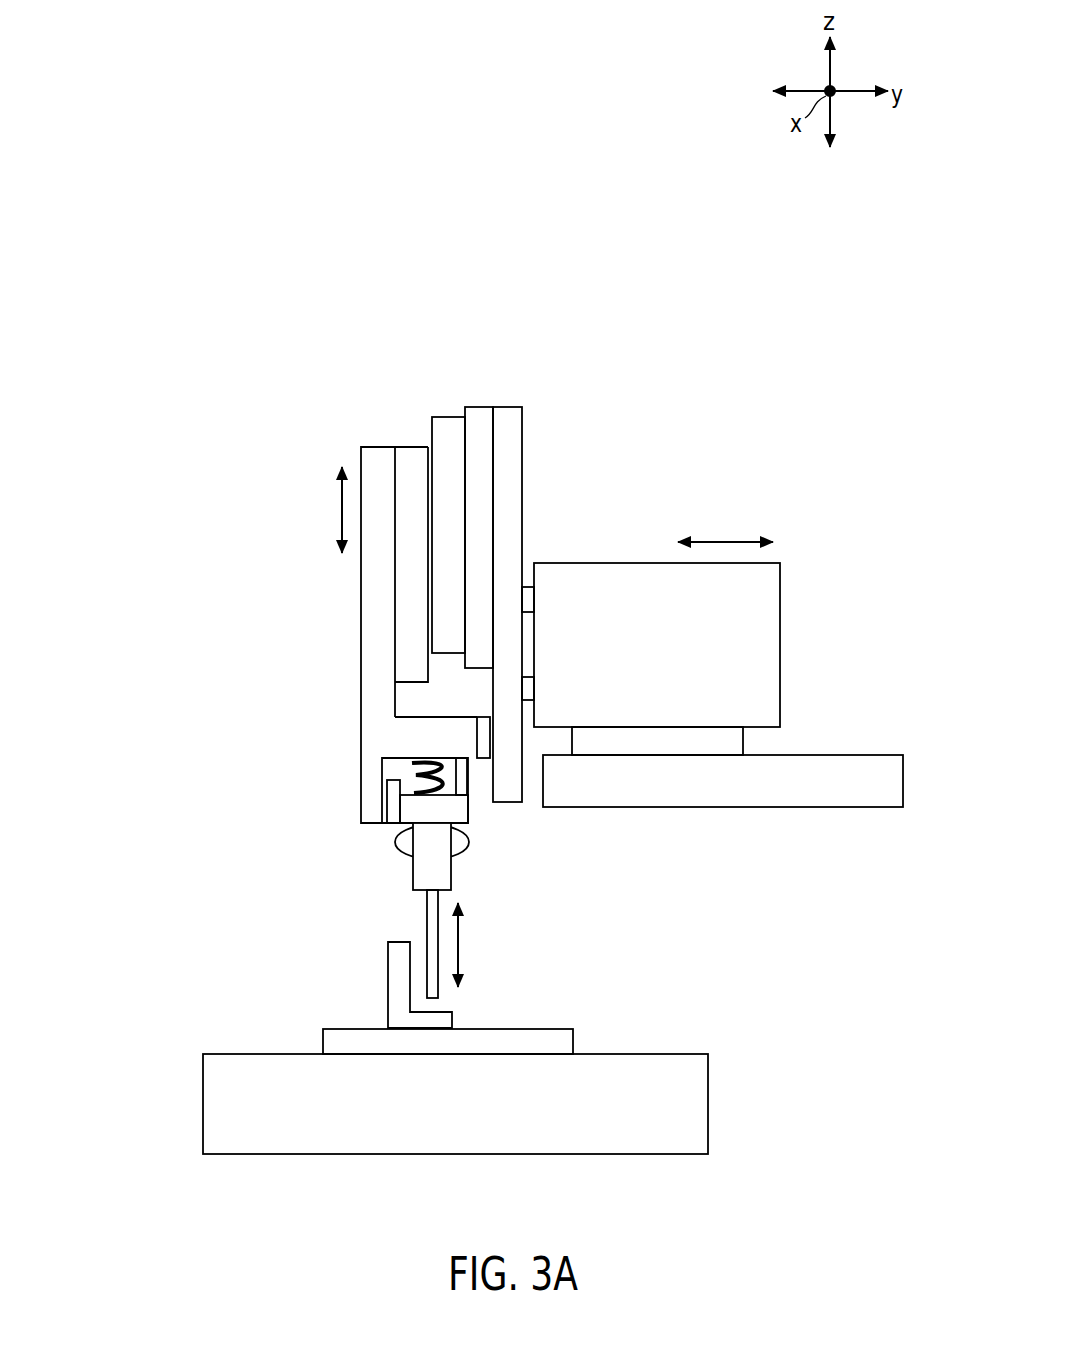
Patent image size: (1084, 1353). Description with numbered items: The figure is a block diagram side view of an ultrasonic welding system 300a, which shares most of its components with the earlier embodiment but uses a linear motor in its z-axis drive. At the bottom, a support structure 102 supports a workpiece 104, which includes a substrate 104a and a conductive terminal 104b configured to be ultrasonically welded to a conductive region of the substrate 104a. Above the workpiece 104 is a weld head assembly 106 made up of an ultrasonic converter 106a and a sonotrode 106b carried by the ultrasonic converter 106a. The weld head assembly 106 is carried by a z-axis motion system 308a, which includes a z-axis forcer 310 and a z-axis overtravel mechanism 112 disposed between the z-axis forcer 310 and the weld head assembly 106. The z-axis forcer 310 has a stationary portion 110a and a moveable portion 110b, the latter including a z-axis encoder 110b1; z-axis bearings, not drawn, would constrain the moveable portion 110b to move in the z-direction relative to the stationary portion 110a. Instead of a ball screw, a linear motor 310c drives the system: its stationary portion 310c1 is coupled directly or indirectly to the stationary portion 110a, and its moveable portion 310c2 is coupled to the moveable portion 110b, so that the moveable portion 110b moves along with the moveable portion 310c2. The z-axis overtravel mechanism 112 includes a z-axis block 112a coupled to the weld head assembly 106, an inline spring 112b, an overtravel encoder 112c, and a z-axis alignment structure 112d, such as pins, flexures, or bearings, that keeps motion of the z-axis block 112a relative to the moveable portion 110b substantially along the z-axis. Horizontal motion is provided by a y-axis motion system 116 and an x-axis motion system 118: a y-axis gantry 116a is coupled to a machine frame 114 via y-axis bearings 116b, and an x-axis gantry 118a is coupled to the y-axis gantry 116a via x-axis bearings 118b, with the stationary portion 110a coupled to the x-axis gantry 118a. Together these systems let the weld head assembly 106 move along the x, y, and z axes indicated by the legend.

The ultrasonic welding system 300a is at (678, 313).
The z-axis motion system 308a is at (308, 378).
The z-axis forcer 310 is at (290, 475).
The linear motor 310c is at (443, 392).
The stationary portion 310c1 is at (445, 503).
The moveable portion 310c2 is at (408, 590).
The stationary portion 110a is at (522, 457).
The moveable portion 110b is at (360, 640).
The z-axis encoder 110b1 is at (478, 737).
The x-axis motion system 118 is at (543, 507).
The x-axis gantry 118a is at (522, 414).
The x-axis bearings 118b is at (530, 687).
The y-axis motion system 116 is at (817, 585).
The y-axis gantry 116a is at (780, 645).
The y-axis bearings 116b is at (743, 745).
The machine frame 114 is at (830, 808).
The z-axis overtravel mechanism 112 is at (483, 842).
The z-axis block 112a is at (437, 813).
The inline spring 112b is at (402, 768).
The overtravel encoder 112c is at (392, 800).
The z-axis alignment structure 112d is at (467, 780).
The weld head assembly 106 is at (470, 877).
The ultrasonic converter 106a is at (425, 872).
The sonotrode 106b is at (427, 927).
The workpiece 104 is at (322, 1015).
The substrate 104a is at (573, 1038).
The conductive terminal 104b is at (388, 977).
The support structure 102 is at (708, 1108).